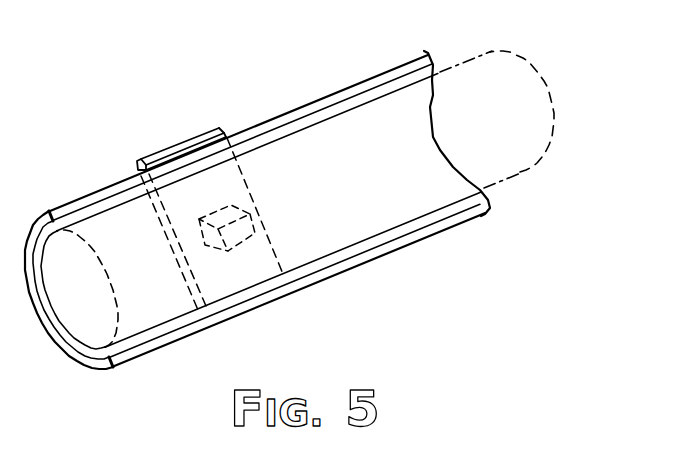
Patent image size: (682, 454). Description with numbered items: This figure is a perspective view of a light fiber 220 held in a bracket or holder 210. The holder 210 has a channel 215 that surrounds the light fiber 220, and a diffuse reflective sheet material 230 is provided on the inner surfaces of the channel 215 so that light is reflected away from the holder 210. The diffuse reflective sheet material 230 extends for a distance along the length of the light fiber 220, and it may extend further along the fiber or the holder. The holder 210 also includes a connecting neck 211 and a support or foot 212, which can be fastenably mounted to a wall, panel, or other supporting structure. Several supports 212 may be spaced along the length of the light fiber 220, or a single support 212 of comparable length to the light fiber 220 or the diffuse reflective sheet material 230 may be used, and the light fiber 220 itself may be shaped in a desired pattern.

The holder 210 is at (270, 228).
The connecting neck 211 is at (259, 206).
The support 212 is at (194, 137).
The channel 215 is at (72, 347).
The light fiber 220 is at (545, 72).
The diffuse reflective sheet material 230 is at (375, 228).